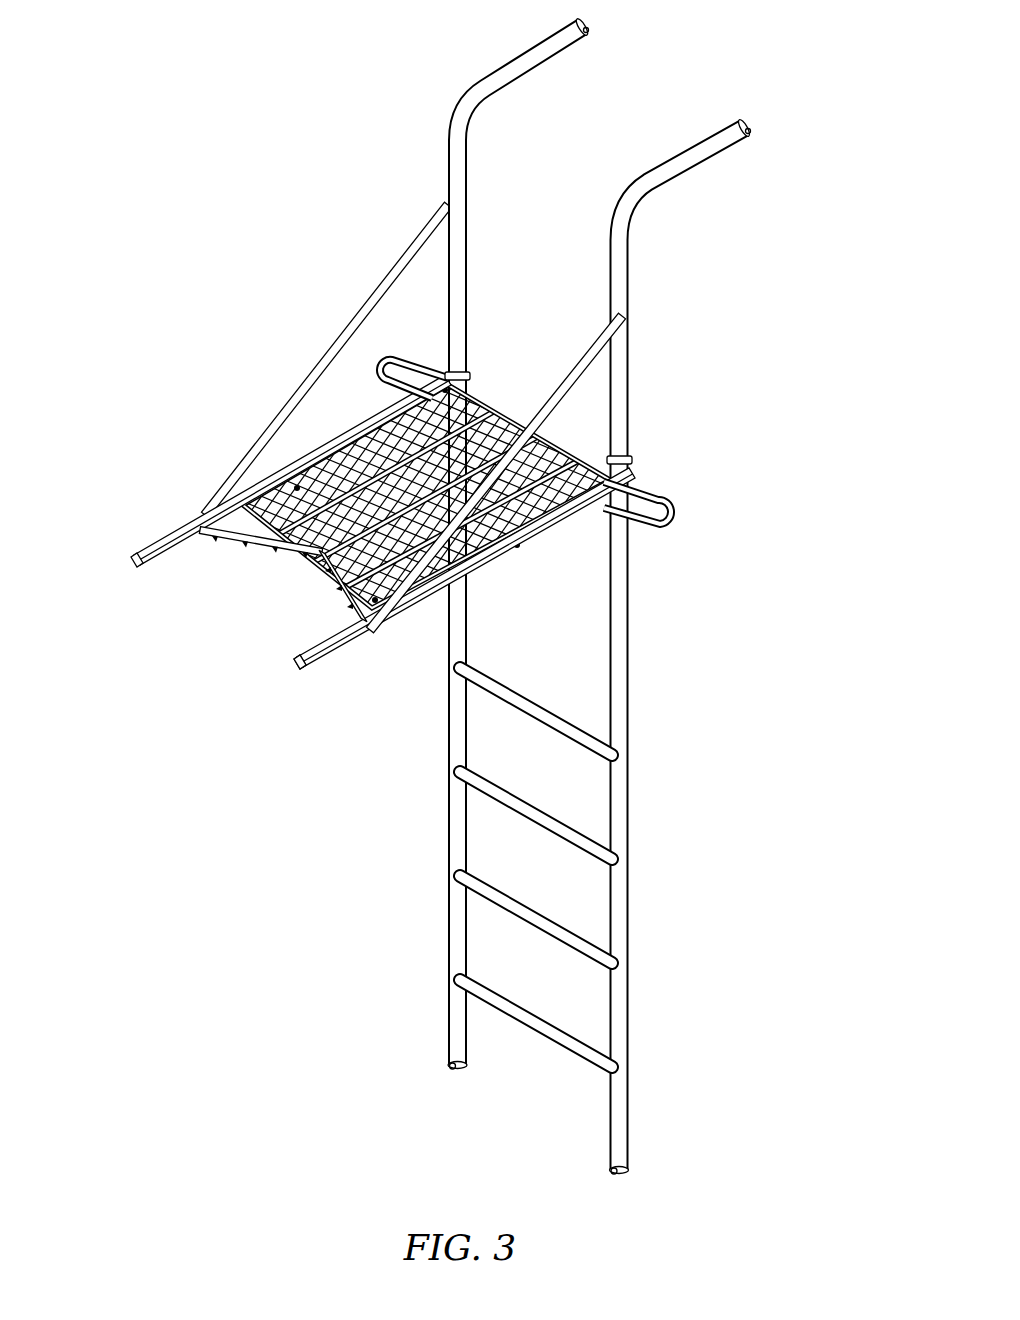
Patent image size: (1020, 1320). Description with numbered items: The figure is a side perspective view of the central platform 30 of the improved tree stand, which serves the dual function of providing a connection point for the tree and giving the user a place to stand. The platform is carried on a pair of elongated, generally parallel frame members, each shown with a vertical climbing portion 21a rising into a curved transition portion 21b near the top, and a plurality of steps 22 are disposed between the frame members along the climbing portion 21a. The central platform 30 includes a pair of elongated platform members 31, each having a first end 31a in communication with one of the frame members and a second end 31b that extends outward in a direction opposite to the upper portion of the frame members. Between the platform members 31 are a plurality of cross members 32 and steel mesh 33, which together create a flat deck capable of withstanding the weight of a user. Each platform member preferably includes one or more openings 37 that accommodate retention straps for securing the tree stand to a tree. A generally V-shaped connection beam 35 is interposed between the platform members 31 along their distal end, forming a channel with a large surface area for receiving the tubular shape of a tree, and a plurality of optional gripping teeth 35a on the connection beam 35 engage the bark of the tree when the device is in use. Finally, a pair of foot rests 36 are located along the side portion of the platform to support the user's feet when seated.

The vertical climbing portion 21a is at (630, 585).
The curved transition portion 21b is at (456, 106).
The steps 22 is at (512, 1015).
The central platform 30 is at (430, 506).
The elongated platform members 31 is at (178, 537).
The first end 31a is at (300, 656).
The second end 31b is at (636, 470).
The cross members 32 is at (298, 488).
The steel mesh 33 is at (512, 532).
The V-shaped connection beam 35 is at (243, 548).
The gripping teeth 35a is at (348, 600).
The foot rests 36 is at (396, 357).
The openings 37 is at (147, 570).